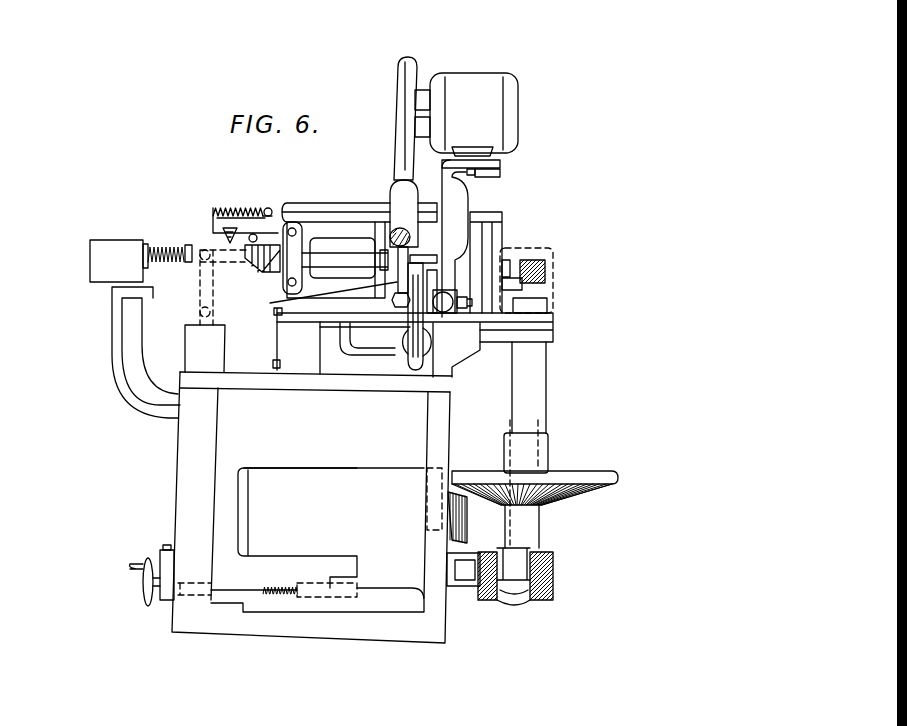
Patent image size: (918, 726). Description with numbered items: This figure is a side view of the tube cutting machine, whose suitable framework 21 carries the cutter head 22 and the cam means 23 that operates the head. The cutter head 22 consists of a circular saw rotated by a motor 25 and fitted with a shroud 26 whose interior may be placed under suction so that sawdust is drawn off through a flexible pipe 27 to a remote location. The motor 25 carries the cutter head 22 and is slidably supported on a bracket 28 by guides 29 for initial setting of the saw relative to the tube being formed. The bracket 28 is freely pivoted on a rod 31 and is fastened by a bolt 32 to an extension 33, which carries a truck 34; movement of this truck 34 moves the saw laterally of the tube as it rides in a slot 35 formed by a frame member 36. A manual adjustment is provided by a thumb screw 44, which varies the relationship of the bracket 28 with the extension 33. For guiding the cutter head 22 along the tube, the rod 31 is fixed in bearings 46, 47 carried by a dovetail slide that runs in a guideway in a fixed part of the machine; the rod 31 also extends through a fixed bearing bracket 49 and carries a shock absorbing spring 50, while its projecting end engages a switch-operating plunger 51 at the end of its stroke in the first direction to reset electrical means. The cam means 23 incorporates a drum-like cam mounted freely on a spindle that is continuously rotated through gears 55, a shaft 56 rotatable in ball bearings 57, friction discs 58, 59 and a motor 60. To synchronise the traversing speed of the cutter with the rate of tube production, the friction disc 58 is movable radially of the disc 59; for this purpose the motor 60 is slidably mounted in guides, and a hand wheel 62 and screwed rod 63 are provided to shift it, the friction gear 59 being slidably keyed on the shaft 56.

The framework 21 is at (195, 490).
The cutter head 22 is at (410, 167).
The cam means 23 is at (300, 215).
The motor 25 is at (490, 128).
The shroud 26 is at (398, 70).
The flexible pipe 27 is at (400, 213).
The bracket 28 is at (500, 173).
The guides 29 is at (482, 178).
The rod 31 is at (333, 260).
The bolt 32 is at (462, 302).
The extension 33 is at (423, 366).
The truck 34 is at (405, 340).
The slot 35 is at (355, 330).
The frame member 36 is at (347, 343).
The thumb screw 44 is at (445, 305).
The bearing 46 is at (275, 310).
The bearing 47 is at (480, 239).
The fixed bearing bracket 49 is at (290, 253).
The shock absorbing spring 50 is at (270, 267).
The switch-operating plunger 51 is at (172, 248).
The gears 55 is at (546, 268).
The shaft 56 is at (527, 370).
The ball bearings 57 is at (552, 575).
The friction disc 58 is at (467, 523).
The friction disc 59 is at (572, 505).
The motor 60 is at (313, 470).
The hand wheel 62 is at (147, 563).
The screwed rod 63 is at (257, 588).